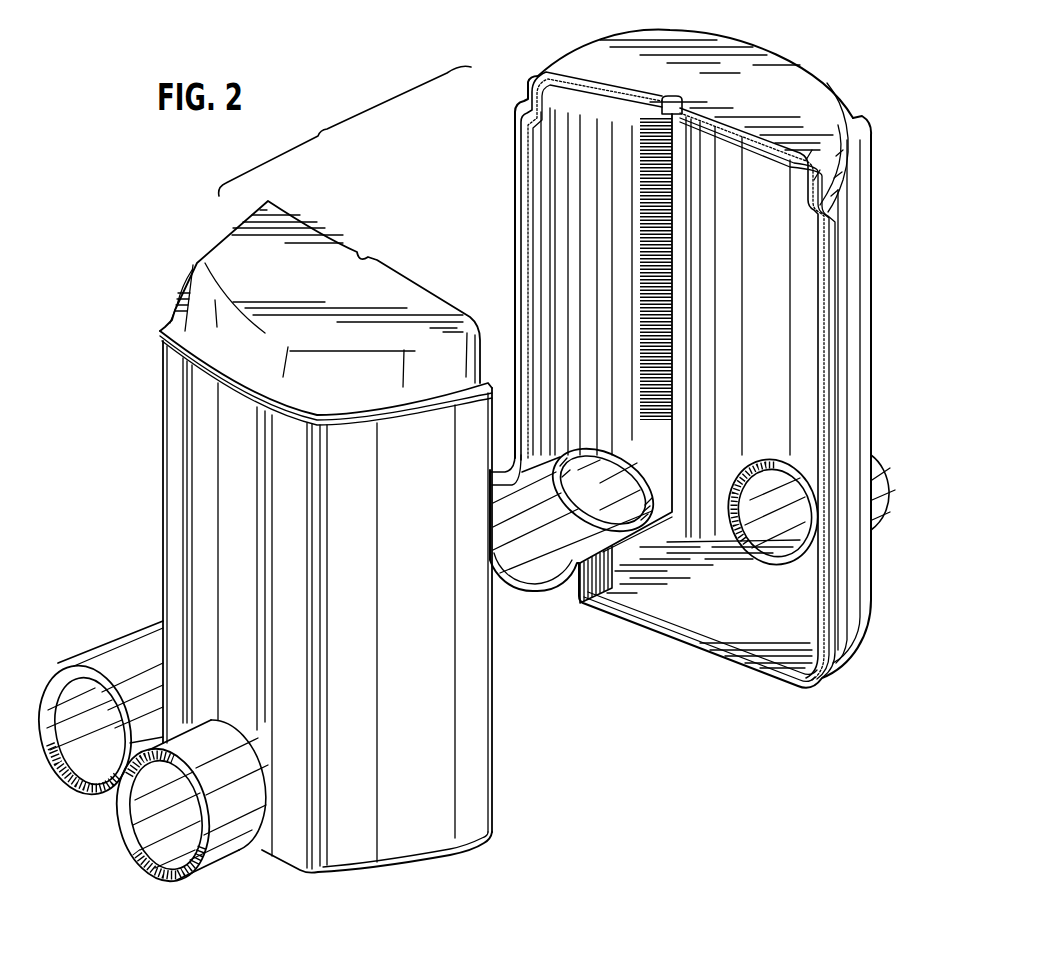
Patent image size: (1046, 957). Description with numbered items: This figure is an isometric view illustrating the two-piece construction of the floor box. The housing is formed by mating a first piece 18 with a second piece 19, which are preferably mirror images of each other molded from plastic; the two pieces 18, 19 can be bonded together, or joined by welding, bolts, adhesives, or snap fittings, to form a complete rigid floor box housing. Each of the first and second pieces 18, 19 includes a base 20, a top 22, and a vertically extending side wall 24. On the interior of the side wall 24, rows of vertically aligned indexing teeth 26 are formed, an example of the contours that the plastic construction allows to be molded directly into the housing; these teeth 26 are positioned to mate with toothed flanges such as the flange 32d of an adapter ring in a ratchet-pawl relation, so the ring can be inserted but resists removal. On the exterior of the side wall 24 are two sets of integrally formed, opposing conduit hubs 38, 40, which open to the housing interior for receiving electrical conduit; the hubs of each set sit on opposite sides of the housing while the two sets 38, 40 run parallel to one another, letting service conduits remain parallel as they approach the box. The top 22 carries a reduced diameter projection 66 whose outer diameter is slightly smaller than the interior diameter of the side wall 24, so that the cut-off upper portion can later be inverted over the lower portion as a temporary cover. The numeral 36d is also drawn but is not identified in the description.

The first piece 18 is at (296, 877).
The second piece 19 is at (882, 303).
The base 20 is at (688, 630).
The top 22 is at (377, 277).
The side wall 24 is at (478, 691).
The indexing teeth 26 is at (640, 186).
The conduit hub 38 is at (157, 847).
The conduit hub 40 is at (90, 770).
The reduced diameter projection 66 is at (205, 293).
The toothed flange 32d is at (545, 950).
The partial numeral (adjacent figure) 36d is at (614, 950).